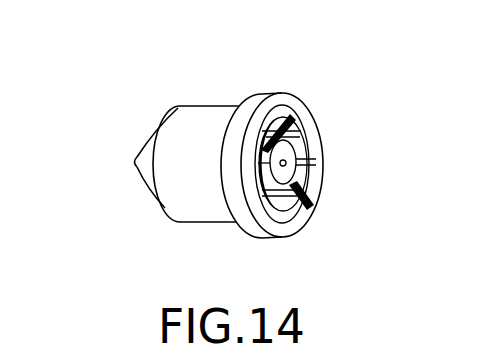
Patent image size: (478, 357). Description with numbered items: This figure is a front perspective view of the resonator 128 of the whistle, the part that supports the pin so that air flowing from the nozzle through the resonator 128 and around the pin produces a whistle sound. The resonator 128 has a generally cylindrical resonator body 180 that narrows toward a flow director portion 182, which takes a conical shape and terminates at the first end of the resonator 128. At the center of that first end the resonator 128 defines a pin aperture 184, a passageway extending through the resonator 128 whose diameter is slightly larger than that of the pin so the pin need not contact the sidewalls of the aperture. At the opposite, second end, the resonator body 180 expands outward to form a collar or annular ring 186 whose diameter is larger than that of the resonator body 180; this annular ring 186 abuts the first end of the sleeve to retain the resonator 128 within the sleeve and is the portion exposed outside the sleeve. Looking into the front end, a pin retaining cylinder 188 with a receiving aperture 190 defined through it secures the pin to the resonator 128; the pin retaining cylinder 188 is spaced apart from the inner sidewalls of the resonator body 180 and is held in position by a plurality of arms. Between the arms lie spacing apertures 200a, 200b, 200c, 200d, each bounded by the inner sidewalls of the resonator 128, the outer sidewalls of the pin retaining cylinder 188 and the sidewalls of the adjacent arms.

The resonator 128 is at (230, 145).
The resonator body 180 is at (200, 222).
The flow director portion 182 is at (148, 177).
The pin aperture 184 is at (110, 165).
The annular ring 186 is at (293, 106).
The pin retaining cylinder 188 is at (305, 196).
The receiving aperture 190 is at (298, 161).
The spacing aperture 200a is at (290, 202).
The spacing aperture 200b is at (270, 145).
The spacing aperture 200c is at (307, 100).
The spacing aperture 200d is at (304, 190).